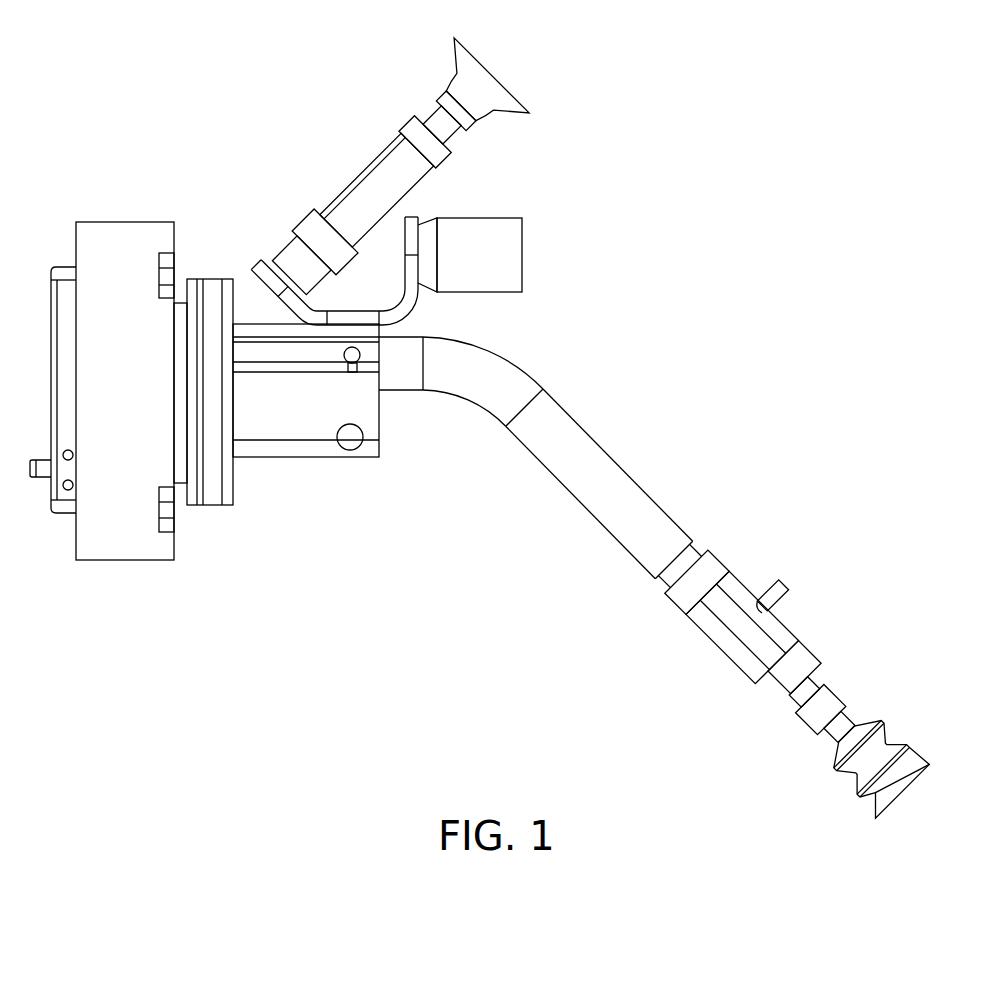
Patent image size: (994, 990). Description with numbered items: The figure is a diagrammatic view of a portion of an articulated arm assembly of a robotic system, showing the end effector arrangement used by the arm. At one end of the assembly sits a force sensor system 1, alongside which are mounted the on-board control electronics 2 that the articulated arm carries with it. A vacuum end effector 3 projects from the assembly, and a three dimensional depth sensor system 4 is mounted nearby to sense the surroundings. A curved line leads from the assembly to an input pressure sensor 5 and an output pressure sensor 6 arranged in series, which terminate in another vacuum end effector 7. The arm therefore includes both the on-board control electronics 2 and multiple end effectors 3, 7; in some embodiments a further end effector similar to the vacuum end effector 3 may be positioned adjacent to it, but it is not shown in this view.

The force sensor system 1 is at (124, 562).
The on-board control electronics 2 is at (212, 507).
The vacuum end effector 3 is at (430, 110).
The three dimensional depth sensor system 4 is at (523, 257).
The input pressure sensor 5 is at (717, 555).
The output pressure sensor 6 is at (837, 692).
The vacuum end effector 7 is at (906, 760).